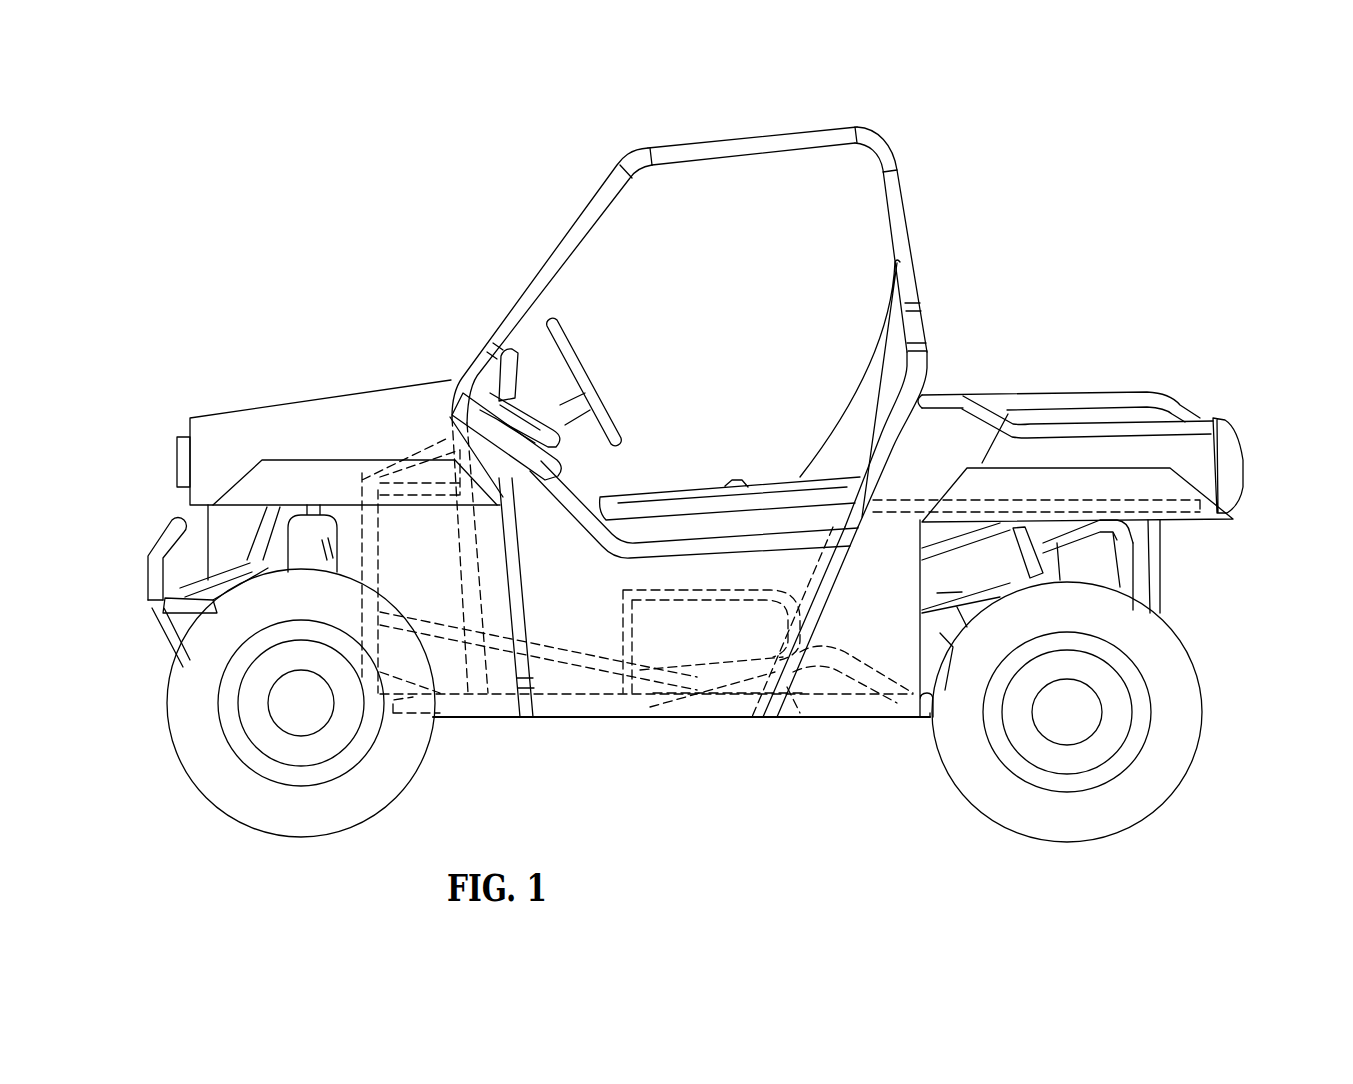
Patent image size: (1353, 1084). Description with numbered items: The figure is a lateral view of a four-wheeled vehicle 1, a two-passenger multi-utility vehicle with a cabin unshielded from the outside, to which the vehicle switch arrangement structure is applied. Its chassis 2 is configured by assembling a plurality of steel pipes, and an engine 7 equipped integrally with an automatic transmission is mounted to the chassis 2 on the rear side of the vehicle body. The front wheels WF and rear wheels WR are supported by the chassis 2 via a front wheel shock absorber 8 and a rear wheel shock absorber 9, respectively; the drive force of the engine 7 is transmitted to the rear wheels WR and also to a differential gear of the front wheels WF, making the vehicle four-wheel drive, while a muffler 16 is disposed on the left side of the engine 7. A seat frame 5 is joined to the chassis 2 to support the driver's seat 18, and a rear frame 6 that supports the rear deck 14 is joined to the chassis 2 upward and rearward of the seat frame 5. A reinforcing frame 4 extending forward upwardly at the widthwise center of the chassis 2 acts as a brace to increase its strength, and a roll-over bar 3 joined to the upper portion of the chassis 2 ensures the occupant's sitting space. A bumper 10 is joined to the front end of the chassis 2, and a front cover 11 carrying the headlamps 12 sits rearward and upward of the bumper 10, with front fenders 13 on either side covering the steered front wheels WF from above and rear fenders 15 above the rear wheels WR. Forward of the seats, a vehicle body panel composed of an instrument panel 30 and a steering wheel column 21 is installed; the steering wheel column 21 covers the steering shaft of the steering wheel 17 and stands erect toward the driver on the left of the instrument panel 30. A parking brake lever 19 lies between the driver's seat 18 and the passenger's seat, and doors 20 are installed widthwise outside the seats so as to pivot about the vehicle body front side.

The four-wheeled vehicle 1 is at (455, 186).
The chassis 2 is at (605, 717).
The roll-over bar 3 is at (602, 200).
The reinforcing frame 4 is at (452, 650).
The seat frame 5 is at (713, 590).
The rear frame 6 is at (910, 497).
The engine 7 is at (930, 713).
The front wheel shock absorber 8 is at (297, 538).
The rear wheel shock absorber 9 is at (1090, 567).
The bumper 10 is at (157, 527).
The front cover 11 is at (292, 418).
The headlamp 12 is at (177, 457).
The front fender 13 is at (327, 482).
The rear deck 14 is at (1127, 413).
The rear fender 15 is at (1073, 480).
The muffler 16 is at (1105, 590).
The steering wheel 17 is at (586, 392).
The driver's seat 18 is at (853, 387).
The parking brake lever 19 is at (647, 497).
The door 20 is at (703, 657).
The steering wheel column 21 is at (507, 408).
The instrument panel 30 is at (517, 370).
The front wheel WF is at (210, 777).
The rear wheel WR is at (1160, 787).